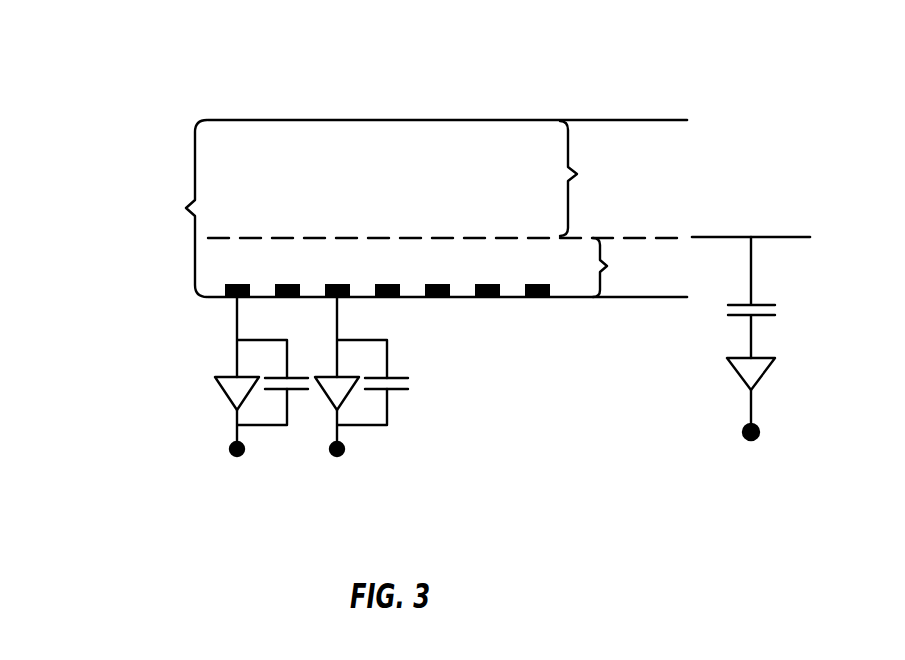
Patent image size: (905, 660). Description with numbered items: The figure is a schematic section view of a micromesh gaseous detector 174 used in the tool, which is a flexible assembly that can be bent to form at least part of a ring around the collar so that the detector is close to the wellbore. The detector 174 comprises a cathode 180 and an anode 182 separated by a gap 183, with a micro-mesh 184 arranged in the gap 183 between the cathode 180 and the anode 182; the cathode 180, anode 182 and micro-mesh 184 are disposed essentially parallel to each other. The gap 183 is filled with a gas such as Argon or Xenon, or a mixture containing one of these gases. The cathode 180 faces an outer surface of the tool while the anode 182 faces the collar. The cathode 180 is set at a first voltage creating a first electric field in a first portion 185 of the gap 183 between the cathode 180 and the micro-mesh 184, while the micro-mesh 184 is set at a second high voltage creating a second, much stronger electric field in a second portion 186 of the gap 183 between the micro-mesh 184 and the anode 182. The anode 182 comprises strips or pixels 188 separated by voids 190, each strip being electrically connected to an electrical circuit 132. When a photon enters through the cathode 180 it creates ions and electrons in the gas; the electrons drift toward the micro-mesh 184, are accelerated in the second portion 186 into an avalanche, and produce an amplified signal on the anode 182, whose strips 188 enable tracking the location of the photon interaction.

The micromesh gaseous detector 174 is at (138, 83).
The cathode 180 is at (250, 118).
The anode 182 is at (635, 297).
The gap 183 is at (175, 208).
The micro-mesh 184 is at (617, 237).
The upper layer thickness 185 is at (591, 178).
The second portion of the gap 186 is at (620, 267).
The strips or pixels 188 is at (485, 297).
The voids 190 is at (408, 297).
The diode-capacitor circuit element 132 is at (358, 432).